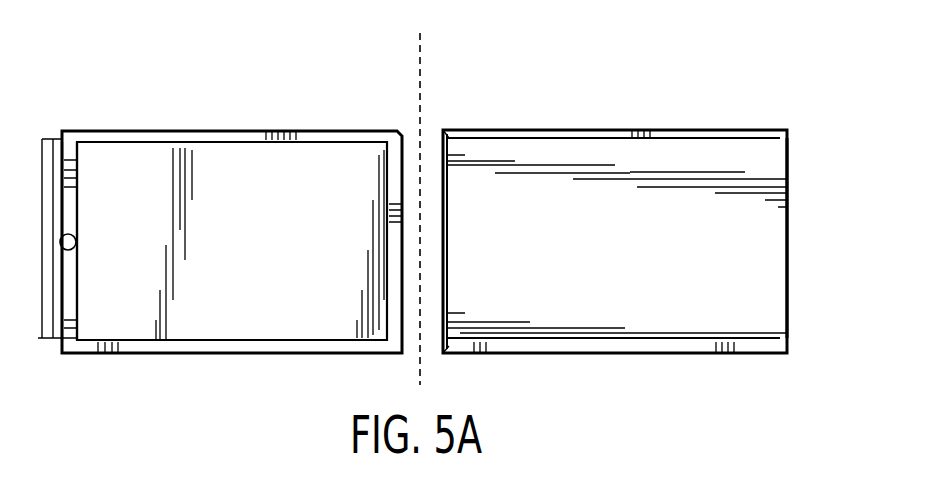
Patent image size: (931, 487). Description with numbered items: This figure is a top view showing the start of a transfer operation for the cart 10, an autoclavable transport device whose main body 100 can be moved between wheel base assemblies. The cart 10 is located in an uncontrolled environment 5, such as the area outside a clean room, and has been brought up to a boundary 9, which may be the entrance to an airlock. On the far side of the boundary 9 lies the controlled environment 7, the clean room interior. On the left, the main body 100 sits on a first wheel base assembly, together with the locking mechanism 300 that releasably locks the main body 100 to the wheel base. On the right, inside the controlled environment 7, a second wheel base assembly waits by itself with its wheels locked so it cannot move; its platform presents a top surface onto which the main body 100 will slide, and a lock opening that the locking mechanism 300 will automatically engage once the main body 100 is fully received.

The uncontrolled environment 5 is at (420, 88).
The controlled environment 7 is at (420, 52).
The boundary 9 is at (420, 52).
The cart 10 is at (220, 244).
The main body 100 is at (204, 165).
The locking mechanism 300 is at (78, 243).